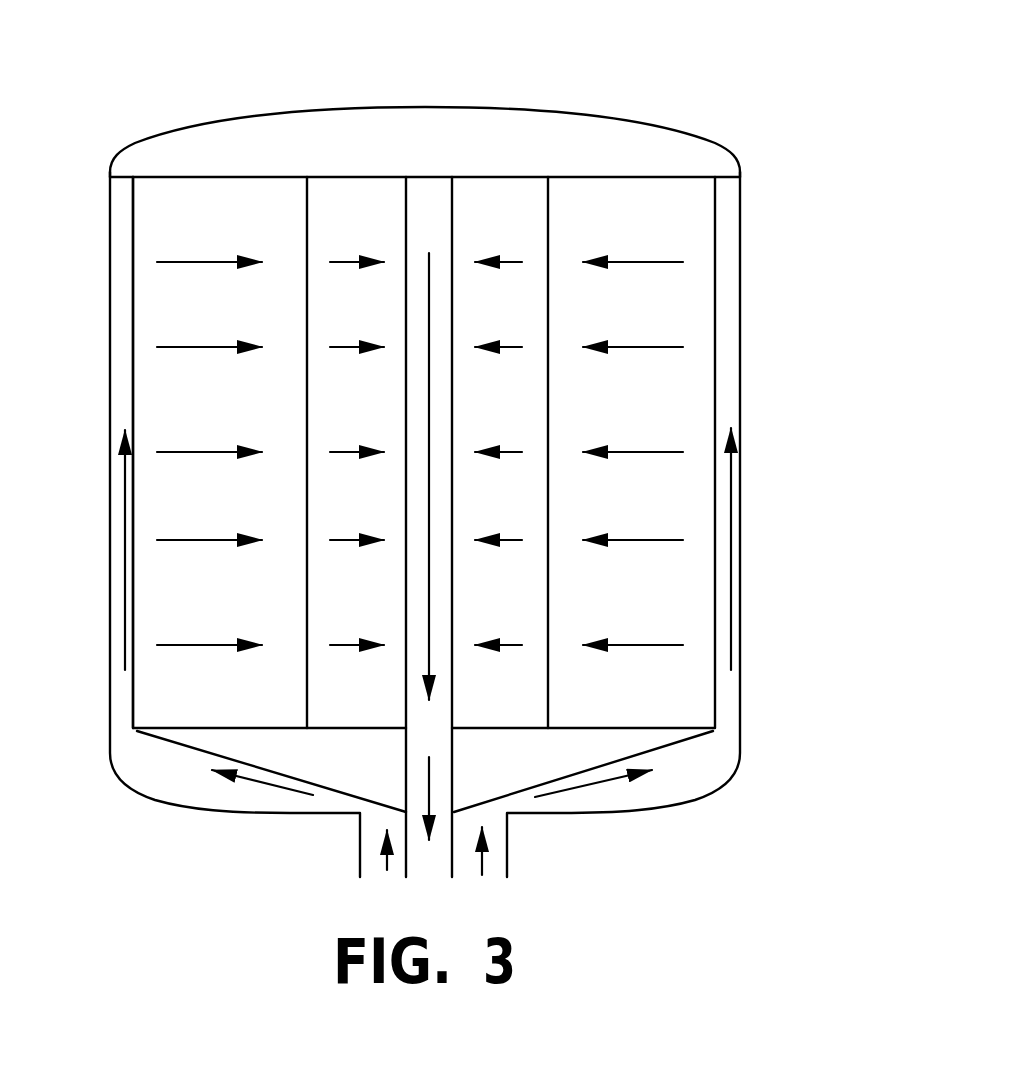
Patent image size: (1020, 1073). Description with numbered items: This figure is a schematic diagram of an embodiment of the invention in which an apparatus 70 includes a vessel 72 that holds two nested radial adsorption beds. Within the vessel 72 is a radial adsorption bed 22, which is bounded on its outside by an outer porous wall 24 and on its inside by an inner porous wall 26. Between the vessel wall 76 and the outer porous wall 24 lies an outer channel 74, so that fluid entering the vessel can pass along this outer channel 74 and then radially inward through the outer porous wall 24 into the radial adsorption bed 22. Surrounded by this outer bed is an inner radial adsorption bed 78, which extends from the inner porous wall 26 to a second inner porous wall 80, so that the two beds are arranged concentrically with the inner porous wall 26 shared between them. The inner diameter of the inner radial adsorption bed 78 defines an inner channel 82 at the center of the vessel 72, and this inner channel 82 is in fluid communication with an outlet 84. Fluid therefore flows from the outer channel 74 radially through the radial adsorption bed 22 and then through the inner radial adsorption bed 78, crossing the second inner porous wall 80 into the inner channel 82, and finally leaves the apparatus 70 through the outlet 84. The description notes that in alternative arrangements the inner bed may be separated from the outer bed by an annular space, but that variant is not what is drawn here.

The apparatus 70 is at (758, 95).
The vessel 72 is at (743, 334).
The radial adsorption bed 22 is at (133, 358).
The outer porous wall 24 is at (133, 292).
The outer channel 74 is at (118, 410).
The vessel wall 76 is at (745, 405).
The inner porous wall 26 is at (307, 571).
The inner radial adsorption bed 78 is at (552, 243).
The inner channel 82 is at (443, 528).
The second inner porous wall 80 is at (457, 605).
The outlet 84 is at (440, 861).